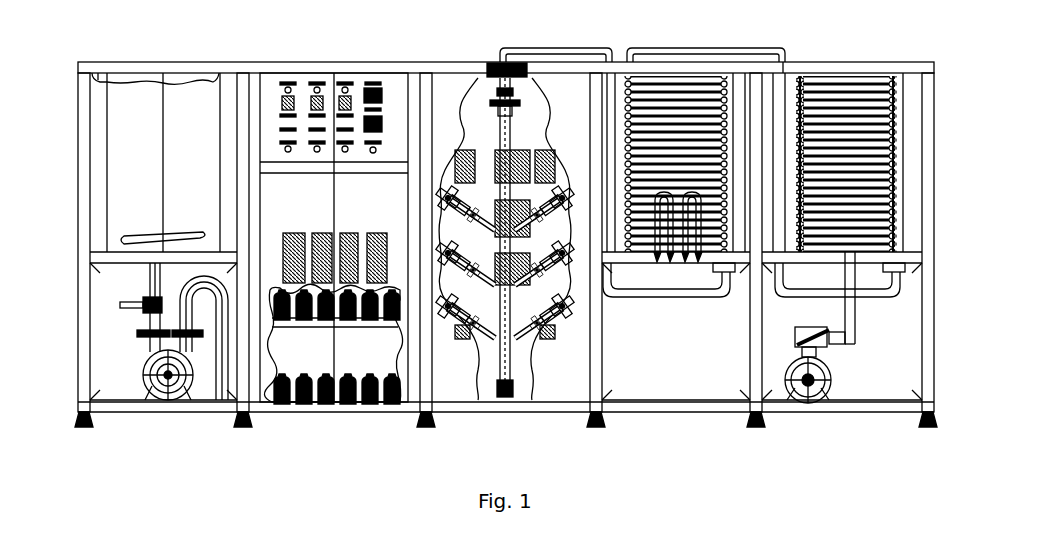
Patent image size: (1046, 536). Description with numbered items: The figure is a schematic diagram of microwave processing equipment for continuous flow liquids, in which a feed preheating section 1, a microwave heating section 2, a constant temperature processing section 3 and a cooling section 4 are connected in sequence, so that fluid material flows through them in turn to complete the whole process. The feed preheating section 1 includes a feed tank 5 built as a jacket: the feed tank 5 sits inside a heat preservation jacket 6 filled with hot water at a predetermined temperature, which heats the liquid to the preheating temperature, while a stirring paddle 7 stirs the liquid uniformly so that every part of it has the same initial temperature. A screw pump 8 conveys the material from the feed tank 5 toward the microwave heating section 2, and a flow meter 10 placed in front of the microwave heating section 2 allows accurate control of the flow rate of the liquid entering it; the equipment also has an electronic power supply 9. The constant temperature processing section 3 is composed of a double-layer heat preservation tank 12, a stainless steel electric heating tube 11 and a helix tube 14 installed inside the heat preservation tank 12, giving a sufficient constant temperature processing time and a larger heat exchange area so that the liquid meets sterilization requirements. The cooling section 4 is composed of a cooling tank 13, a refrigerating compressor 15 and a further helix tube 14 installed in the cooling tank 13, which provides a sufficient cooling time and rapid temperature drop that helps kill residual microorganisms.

The feed preheating section 1 is at (130, 78).
The microwave heating section 2 is at (523, 75).
The constant temperature processing section 3 is at (677, 77).
The cooling section 4 is at (847, 73).
The feed tank 5 is at (117, 122).
The heat preservation jacket 6 is at (100, 140).
The stirring paddle 7 is at (125, 238).
The screw pump 8 is at (145, 376).
The electronic power supply 9 is at (328, 403).
The flow meter 10 is at (497, 400).
The electric heating tube 11 is at (693, 263).
The heat preservation tank 12 is at (727, 117).
The cooling tank 13 is at (903, 130).
The helix tube 14 is at (783, 67).
The refrigerating compressor 15 is at (813, 383).